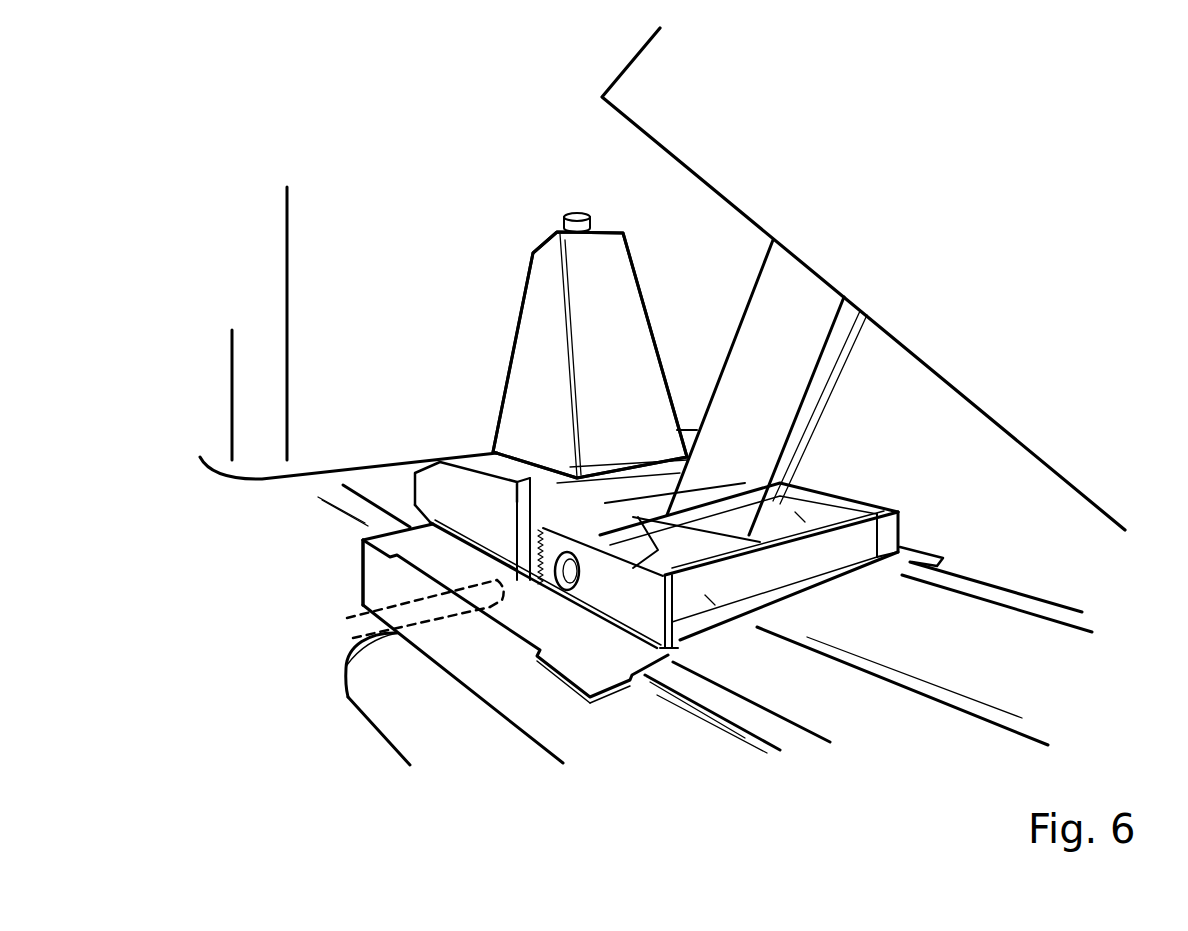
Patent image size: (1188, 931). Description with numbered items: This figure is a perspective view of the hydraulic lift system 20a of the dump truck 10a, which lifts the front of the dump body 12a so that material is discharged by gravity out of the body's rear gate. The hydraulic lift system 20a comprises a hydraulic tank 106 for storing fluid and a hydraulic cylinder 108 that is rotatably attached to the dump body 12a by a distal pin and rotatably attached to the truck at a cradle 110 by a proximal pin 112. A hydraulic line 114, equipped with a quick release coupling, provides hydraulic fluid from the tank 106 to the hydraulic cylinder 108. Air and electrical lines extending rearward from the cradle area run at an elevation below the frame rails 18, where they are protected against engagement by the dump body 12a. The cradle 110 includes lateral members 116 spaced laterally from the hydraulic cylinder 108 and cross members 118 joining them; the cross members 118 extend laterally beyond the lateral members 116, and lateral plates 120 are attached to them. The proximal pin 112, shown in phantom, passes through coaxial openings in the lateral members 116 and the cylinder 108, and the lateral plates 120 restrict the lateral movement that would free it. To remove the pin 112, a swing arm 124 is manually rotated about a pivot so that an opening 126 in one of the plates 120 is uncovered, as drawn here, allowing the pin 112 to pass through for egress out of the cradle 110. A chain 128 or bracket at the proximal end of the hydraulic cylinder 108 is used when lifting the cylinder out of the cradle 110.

The dump truck 10a is at (308, 586).
The dump body 12a is at (781, 171).
The frame rails 18 is at (1023, 597).
The hydraulic lift system 20a is at (519, 215).
The hydraulic tank 106 is at (499, 378).
The hydraulic cylinder 108 is at (756, 287).
The cradle 110 is at (594, 626).
The proximal pin 112 is at (400, 645).
The hydraulic line 114 is at (837, 388).
The lateral members 116 is at (710, 600).
The cross members 118 is at (640, 493).
The lateral plates 120 is at (852, 496).
The swing arm 124 is at (575, 572).
The opening 126 is at (431, 630).
The chain 128 is at (672, 525).